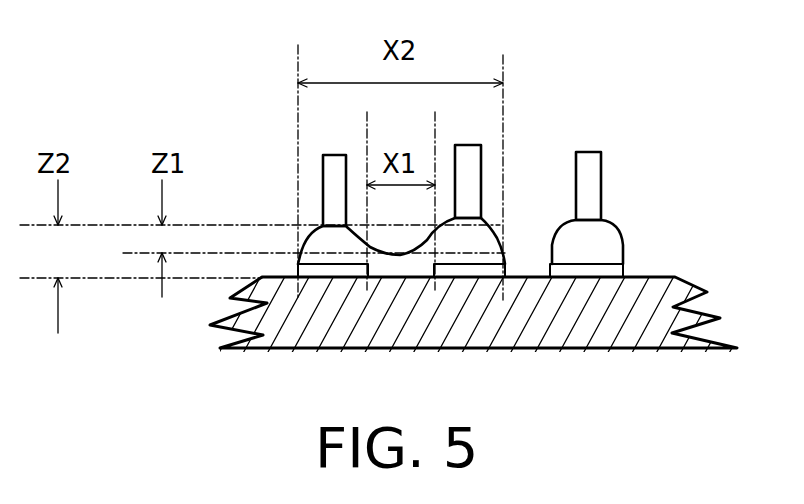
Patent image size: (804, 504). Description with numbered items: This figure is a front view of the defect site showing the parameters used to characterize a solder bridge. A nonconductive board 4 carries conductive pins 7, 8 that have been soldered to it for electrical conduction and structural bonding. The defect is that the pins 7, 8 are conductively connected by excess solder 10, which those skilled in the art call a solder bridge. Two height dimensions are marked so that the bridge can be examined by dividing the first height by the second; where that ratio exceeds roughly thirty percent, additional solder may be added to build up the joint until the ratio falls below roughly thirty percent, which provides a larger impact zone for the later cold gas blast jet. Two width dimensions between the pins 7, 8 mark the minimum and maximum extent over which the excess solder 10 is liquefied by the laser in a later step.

The nonconductive board 4 is at (298, 348).
The conductive pin 7 is at (333, 153).
The conductive pin 8 is at (470, 142).
The excess solder 10 is at (497, 235).